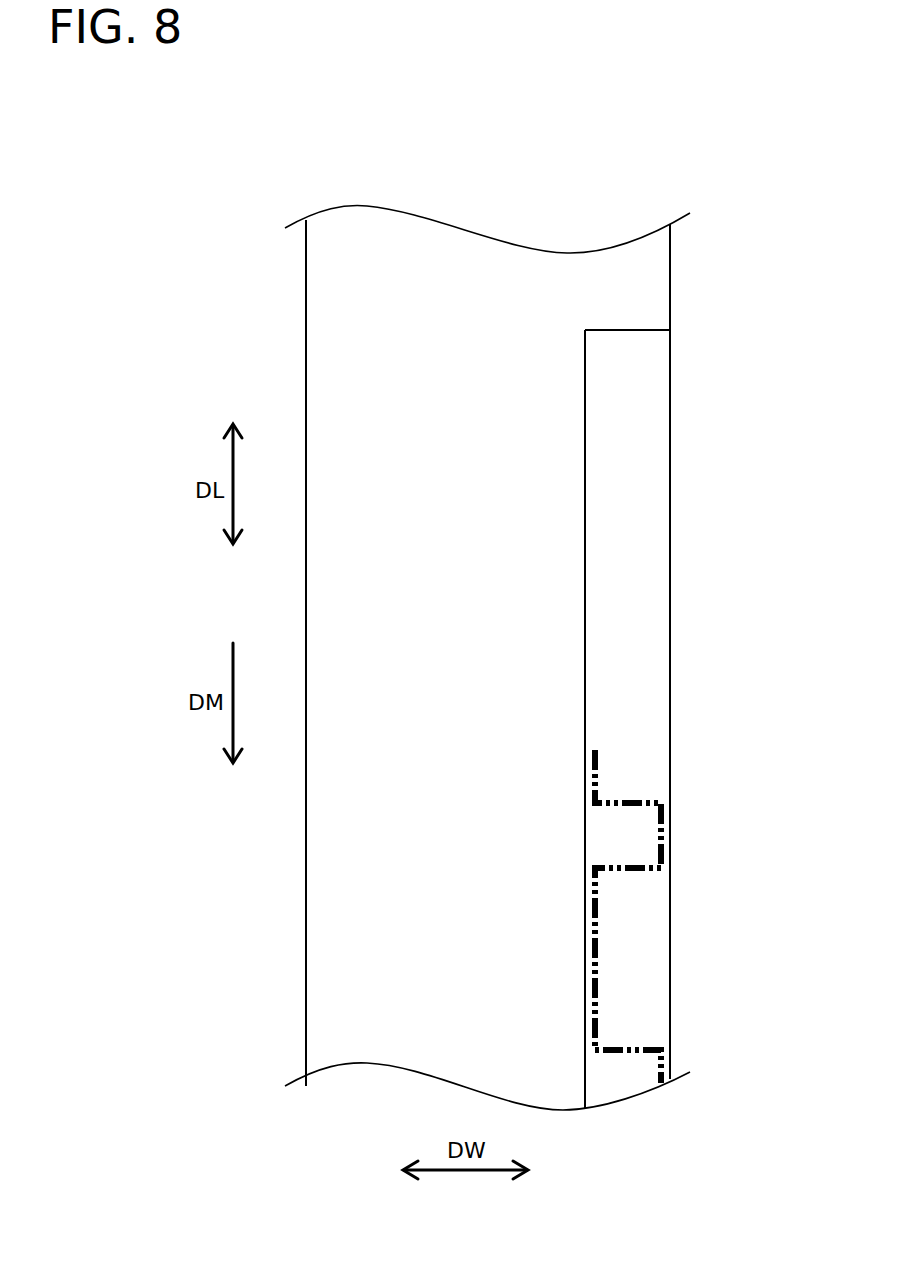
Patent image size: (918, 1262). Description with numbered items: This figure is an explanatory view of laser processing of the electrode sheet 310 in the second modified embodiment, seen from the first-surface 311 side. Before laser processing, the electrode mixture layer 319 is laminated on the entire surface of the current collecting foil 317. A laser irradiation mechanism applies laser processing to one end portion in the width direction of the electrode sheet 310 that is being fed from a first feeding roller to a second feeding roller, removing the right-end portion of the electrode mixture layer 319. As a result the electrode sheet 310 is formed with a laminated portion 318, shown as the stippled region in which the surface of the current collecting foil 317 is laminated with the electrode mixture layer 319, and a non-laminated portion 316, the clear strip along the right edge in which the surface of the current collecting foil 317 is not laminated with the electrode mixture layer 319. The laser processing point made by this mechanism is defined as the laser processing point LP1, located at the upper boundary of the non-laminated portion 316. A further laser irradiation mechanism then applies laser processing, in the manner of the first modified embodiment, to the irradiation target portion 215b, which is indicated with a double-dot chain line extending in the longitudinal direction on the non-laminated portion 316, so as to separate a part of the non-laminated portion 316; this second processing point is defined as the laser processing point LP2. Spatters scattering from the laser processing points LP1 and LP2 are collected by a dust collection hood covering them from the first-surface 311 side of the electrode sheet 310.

The electrode sheet 310 is at (442, 623).
The laminated portion 318 is at (487, 623).
The electrode mixture layer 319 is at (425, 233).
The non-laminated portion 316 is at (705, 719).
The current collecting foil 317 is at (676, 719).
The first surface 311 is at (676, 719).
The laser processing point LP1 is at (625, 332).
The laser processing point LP2 is at (688, 904).
The irradiation target portion 215b is at (643, 803).